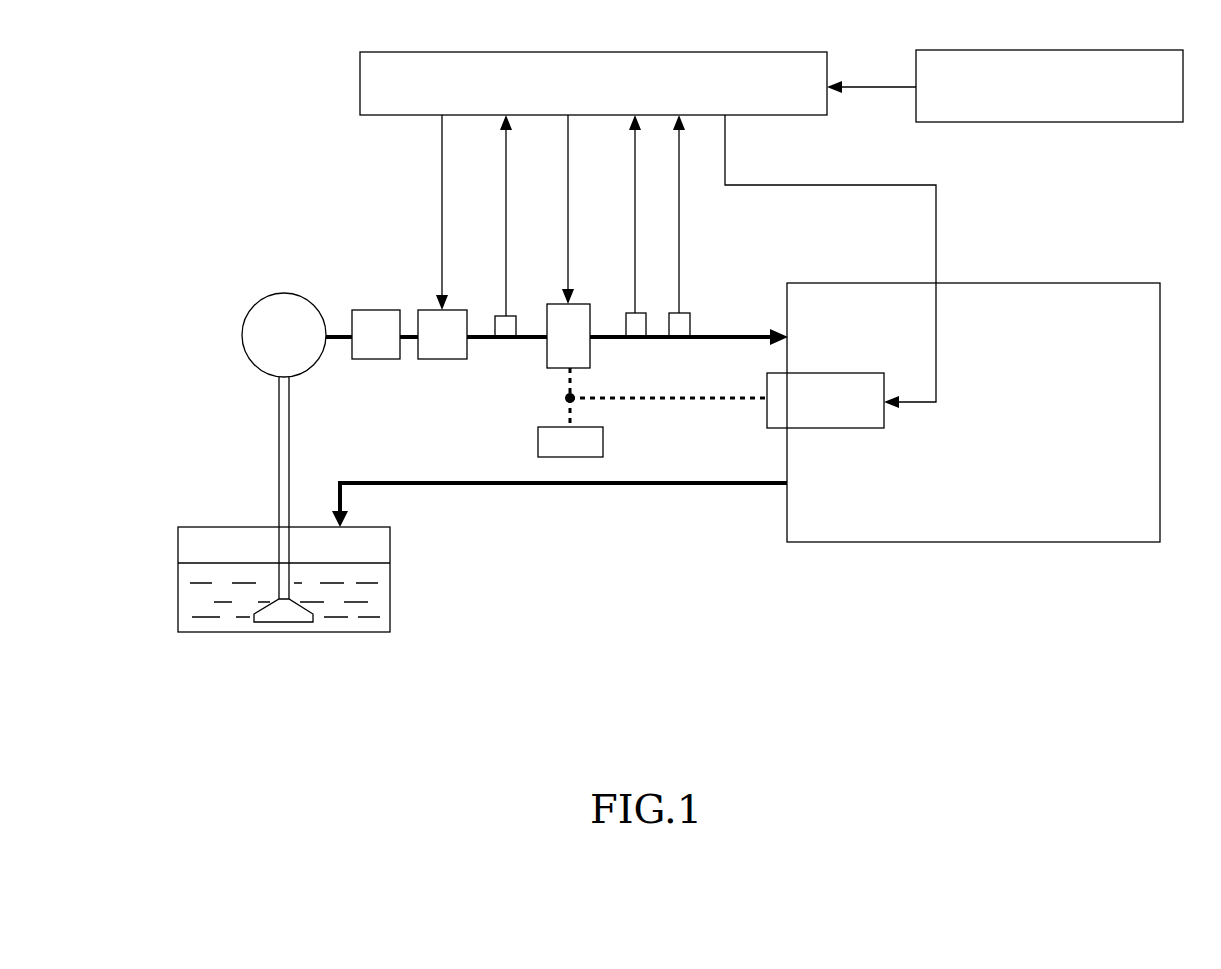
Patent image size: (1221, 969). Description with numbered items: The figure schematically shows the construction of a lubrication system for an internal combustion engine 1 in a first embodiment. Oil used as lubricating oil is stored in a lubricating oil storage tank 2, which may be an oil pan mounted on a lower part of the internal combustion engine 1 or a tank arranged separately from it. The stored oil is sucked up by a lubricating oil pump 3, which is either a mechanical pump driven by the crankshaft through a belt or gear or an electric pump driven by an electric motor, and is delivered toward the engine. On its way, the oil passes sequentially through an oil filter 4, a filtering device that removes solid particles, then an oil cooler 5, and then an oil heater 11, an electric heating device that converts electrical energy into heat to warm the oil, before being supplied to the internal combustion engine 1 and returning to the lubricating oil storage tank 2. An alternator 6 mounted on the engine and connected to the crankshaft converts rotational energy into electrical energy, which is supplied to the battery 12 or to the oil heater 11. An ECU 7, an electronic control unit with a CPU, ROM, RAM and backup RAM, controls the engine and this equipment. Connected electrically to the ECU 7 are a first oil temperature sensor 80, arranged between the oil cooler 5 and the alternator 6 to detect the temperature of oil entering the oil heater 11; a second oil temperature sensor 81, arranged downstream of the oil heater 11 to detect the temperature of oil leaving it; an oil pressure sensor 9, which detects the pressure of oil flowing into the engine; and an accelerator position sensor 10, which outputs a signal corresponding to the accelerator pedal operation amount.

The internal combustion engine 1 is at (1053, 283).
The lubricating oil storage tank 2 is at (200, 527).
The lubricating oil pump 3 is at (260, 306).
The oil filter 4 is at (378, 310).
The oil cooler 5 is at (443, 359).
The alternator 6 is at (865, 428).
The ECU 7 is at (360, 80).
The oil pressure sensor 9 is at (690, 316).
The accelerator position sensor 10 is at (1125, 122).
The oil heater 11 is at (591, 346).
The battery 12 is at (538, 440).
The first oil temperature sensor 80 is at (497, 316).
The second oil temperature sensor 81 is at (626, 316).